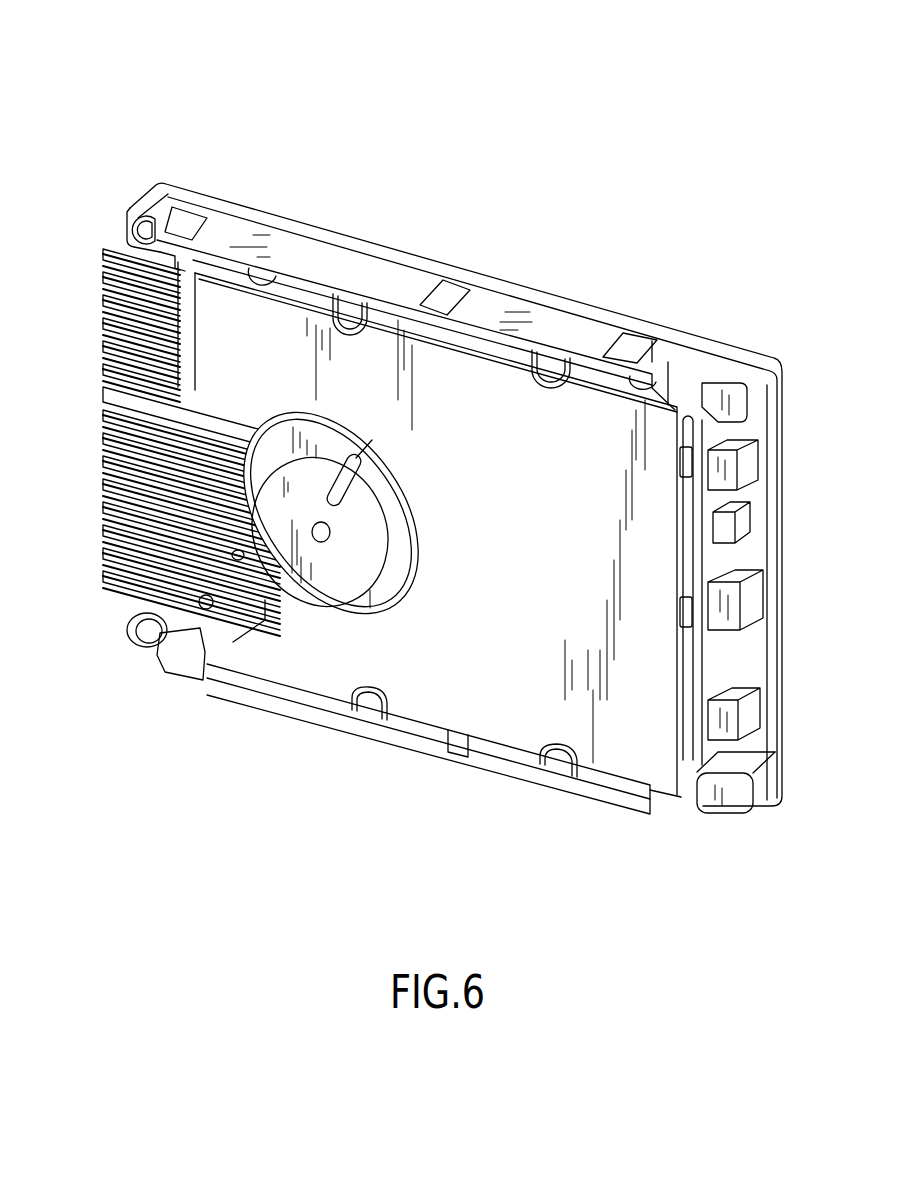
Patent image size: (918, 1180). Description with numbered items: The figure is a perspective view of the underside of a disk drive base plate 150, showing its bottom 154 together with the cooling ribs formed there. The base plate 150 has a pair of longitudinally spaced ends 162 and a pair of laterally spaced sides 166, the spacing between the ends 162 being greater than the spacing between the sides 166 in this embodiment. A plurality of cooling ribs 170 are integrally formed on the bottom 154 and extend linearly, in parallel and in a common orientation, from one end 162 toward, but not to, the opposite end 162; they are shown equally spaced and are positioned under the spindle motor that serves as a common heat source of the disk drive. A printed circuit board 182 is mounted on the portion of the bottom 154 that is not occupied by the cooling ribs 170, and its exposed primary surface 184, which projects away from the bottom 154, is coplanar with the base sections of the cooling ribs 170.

The disk drive base plate 150 is at (608, 127).
The bottom 154 is at (343, 565).
The ends 162 is at (127, 236).
The sides 166 is at (305, 265).
The cooling ribs 170 is at (107, 370).
The printed circuit board 182 is at (650, 758).
The exposed primary surface 184 is at (507, 557).